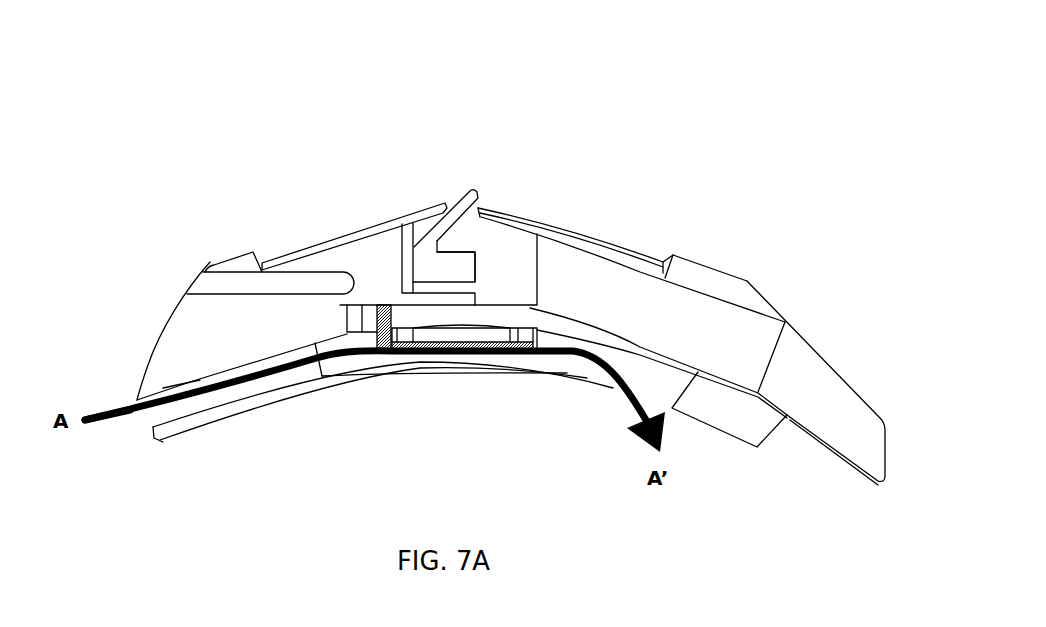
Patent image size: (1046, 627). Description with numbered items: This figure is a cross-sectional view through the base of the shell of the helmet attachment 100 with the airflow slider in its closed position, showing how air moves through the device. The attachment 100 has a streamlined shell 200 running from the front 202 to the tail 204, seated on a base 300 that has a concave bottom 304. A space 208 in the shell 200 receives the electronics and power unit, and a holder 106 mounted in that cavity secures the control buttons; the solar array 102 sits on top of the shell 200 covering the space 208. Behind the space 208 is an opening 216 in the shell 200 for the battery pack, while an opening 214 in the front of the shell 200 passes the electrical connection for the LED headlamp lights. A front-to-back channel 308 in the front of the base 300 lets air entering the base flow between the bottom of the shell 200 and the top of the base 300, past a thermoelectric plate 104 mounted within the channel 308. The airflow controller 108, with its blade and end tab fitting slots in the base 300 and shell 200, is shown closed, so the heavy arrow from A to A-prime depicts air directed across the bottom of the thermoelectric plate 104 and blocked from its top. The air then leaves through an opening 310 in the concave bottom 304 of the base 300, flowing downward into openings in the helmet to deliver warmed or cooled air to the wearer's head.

The helmet attachment 100 is at (662, 164).
The solar array 102 is at (376, 228).
The thermoelectric plate 104 is at (390, 380).
The holder 106 is at (473, 190).
The airflow controller 108 is at (382, 305).
The shell 200 is at (717, 268).
The front 202 is at (167, 342).
The tail 204 is at (802, 347).
The space 208 is at (492, 234).
The opening 214 is at (210, 286).
The opening 216 is at (563, 317).
The base 300 is at (190, 427).
The concave bottom 304 is at (297, 420).
The channel 308 is at (146, 423).
The opening 310 is at (676, 426).